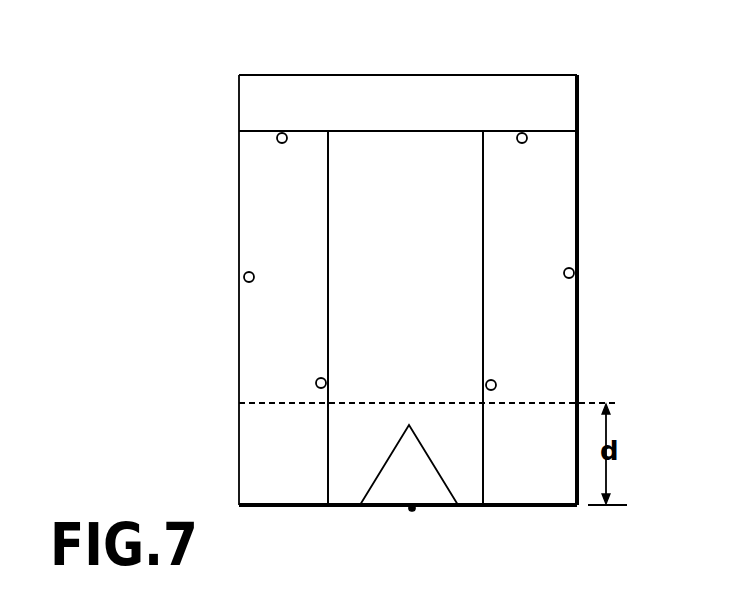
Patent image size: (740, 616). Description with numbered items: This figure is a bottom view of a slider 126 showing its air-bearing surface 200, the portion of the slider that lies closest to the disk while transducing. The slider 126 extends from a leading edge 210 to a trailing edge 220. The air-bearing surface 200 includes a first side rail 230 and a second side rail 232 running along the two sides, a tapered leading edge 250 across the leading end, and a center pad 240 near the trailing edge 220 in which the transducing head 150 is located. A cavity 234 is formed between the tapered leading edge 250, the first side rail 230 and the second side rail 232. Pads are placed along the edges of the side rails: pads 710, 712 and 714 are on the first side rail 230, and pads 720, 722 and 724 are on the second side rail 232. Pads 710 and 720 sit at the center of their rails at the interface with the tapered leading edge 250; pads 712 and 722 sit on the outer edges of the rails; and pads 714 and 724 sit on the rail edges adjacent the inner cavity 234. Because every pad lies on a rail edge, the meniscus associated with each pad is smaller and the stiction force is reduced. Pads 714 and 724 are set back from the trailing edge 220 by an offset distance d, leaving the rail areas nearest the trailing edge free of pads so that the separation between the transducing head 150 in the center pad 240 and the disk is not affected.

The slider 126 is at (540, 95).
The air-bearing surface 200 is at (372, 158).
The leading edge 210 is at (425, 75).
The tapered leading edge 250 is at (557, 117).
The cavity 234 is at (362, 283).
The trailing edge 220 is at (483, 506).
The first side rail 230 is at (258, 389).
The second side rail 232 is at (555, 371).
The center pad 240 is at (392, 498).
The transducing head 150 is at (412, 512).
The pad 710 is at (284, 144).
The pad 712 is at (246, 272).
The pad 714 is at (317, 378).
The pad 720 is at (524, 143).
The pad 722 is at (573, 267).
The pad 724 is at (494, 380).